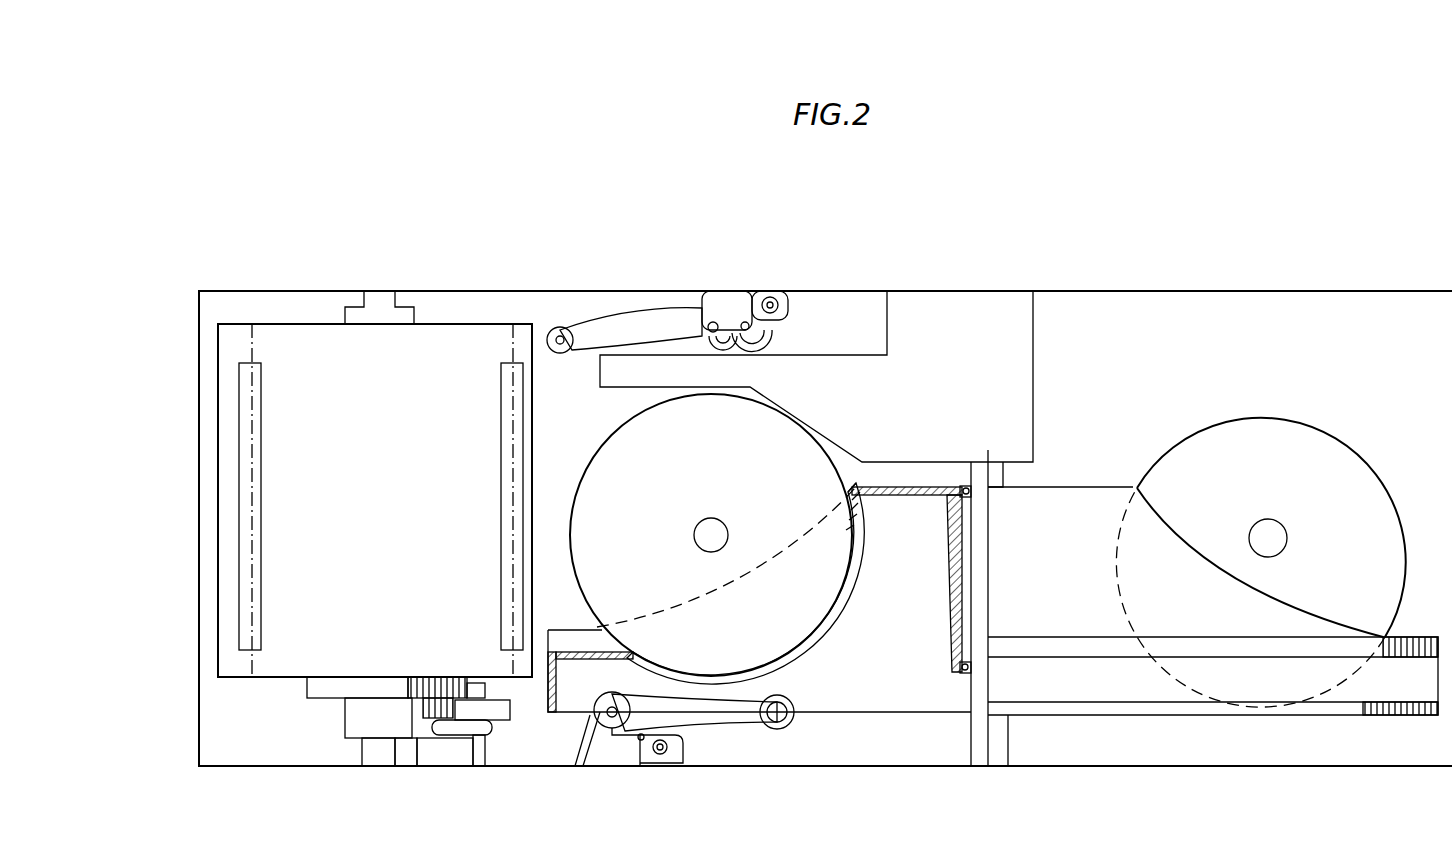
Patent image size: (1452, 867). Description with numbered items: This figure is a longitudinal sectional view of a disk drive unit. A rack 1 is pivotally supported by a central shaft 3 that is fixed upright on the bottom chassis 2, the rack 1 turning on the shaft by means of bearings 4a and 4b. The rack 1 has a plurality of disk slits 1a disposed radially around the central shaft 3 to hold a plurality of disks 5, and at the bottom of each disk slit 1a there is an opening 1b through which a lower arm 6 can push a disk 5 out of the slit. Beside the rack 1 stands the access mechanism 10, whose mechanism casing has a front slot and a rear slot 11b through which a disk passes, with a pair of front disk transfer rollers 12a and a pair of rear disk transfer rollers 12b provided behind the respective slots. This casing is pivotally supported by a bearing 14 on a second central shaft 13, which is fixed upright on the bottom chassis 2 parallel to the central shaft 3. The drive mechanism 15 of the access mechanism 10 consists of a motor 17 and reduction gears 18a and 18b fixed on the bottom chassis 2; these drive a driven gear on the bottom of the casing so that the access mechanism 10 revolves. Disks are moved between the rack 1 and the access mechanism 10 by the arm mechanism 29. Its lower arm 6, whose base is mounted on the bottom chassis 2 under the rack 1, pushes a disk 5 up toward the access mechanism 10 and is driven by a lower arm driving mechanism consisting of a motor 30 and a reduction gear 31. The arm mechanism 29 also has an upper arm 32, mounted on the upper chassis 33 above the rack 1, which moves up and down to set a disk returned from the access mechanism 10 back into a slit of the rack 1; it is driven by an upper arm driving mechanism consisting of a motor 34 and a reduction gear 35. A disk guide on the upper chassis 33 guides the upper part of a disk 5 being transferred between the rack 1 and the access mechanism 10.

The rack 1 is at (873, 713).
The disk slit 1a is at (570, 635).
The opening 1b is at (735, 665).
The bottom chassis 2 is at (808, 768).
The central shaft 3 is at (963, 740).
The bearing 4a is at (966, 487).
The bearing 4b is at (945, 690).
The disk 5 is at (598, 455).
The lower arm 6 is at (713, 735).
The access mechanism 10 is at (303, 313).
The rear slot 11b is at (218, 355).
The front disk transfer rollers 12a is at (501, 428).
The rear disk transfer rollers 12b is at (262, 380).
The central shaft 13 is at (365, 750).
The bearing 14 is at (345, 730).
The drive mechanism 15 is at (307, 690).
The motor 17 is at (440, 750).
The reduction gear 18a is at (480, 740).
The reduction gear 18b is at (500, 720).
The arm mechanism 29 is at (623, 778).
The motor 30 is at (655, 767).
The reduction gear 31 is at (582, 760).
The upper arm 32 is at (620, 310).
The upper chassis 33 is at (540, 290).
The motor 34 is at (783, 298).
The reduction gear 35 is at (775, 335).